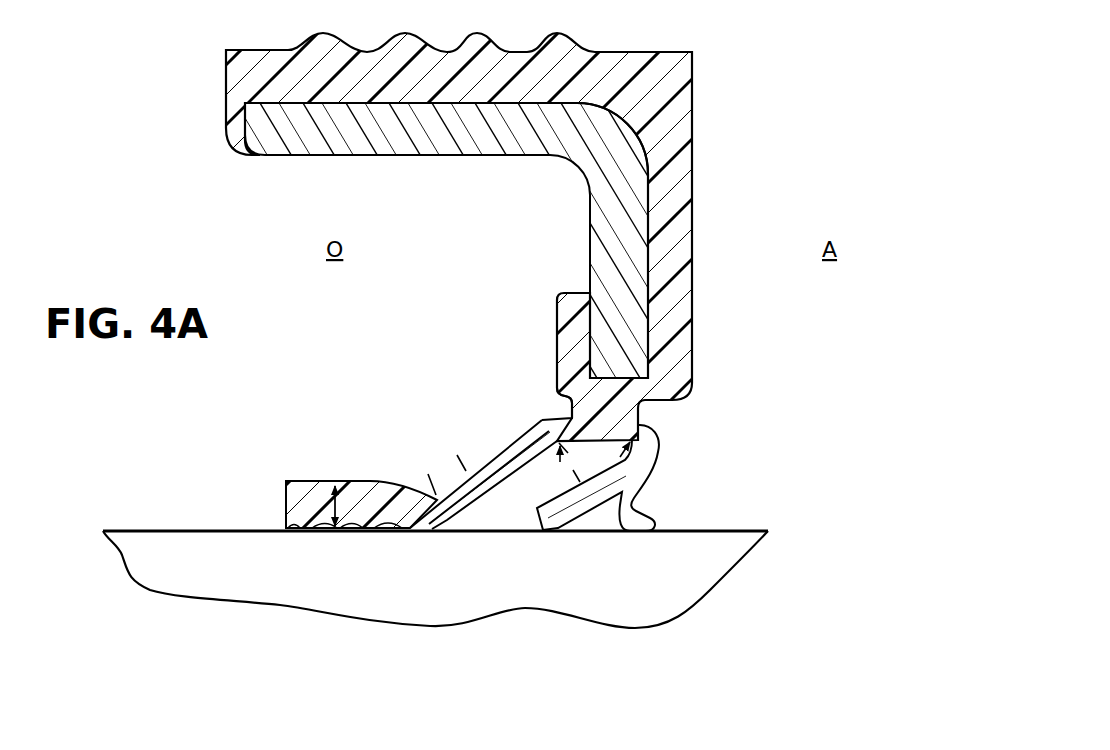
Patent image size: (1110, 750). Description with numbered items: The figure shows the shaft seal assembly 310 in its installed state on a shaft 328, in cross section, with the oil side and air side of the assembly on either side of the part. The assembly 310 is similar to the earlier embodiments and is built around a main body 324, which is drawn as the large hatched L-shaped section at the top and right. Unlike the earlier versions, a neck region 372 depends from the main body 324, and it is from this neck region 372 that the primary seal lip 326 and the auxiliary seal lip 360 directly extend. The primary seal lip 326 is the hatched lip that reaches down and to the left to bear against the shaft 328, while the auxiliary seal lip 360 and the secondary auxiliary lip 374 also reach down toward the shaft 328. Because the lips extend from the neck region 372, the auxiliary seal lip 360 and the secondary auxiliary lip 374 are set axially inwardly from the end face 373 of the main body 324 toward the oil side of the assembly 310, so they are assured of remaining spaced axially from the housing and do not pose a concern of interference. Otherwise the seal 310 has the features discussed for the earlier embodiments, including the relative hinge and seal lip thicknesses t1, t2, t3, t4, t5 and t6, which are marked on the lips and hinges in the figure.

The shaft seal assembly 310 is at (550, 305).
The end face 373 is at (692, 318).
The main body 324 is at (582, 385).
The neck region 372 is at (560, 398).
The primary seal lip 326 is at (303, 460).
The secondary auxiliary lip 374 is at (672, 515).
The shaft 328 is at (764, 530).
The auxiliary seal lip 360 is at (435, 579).
The thickness t1 is at (340, 500).
The thickness t2 is at (489, 508).
The thickness t3 is at (446, 534).
The thickness t4 is at (548, 418).
The thickness t5 is at (593, 517).
The thickness t6 is at (660, 435).